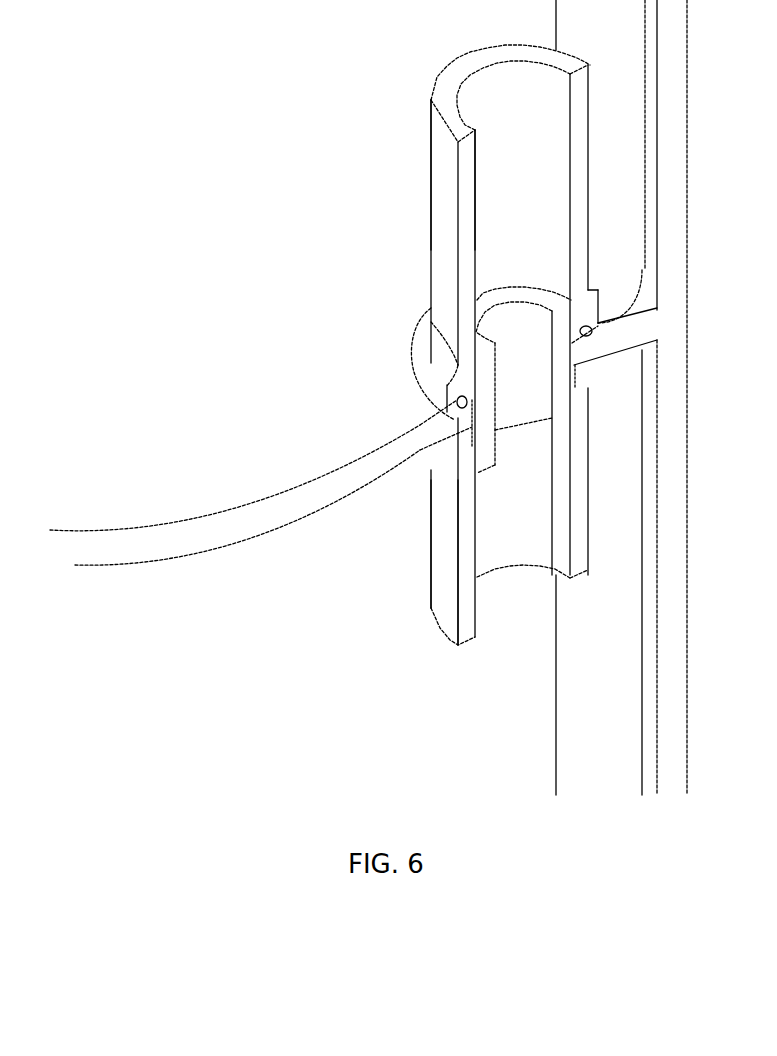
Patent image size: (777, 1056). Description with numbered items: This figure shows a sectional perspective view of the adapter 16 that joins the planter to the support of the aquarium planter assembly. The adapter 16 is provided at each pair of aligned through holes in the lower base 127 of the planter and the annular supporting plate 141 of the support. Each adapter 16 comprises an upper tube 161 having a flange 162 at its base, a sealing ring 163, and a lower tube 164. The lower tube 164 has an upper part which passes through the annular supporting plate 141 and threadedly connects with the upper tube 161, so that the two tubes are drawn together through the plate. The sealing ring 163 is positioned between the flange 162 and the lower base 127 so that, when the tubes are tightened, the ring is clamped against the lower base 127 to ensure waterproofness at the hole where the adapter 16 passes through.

The adapter 16 is at (418, 212).
The upper tube 161 is at (441, 147).
The flange 162 is at (433, 357).
The sealing ring 163 is at (455, 402).
The lower tube 164 is at (445, 555).
The lower base 127 is at (373, 470).
The annular supporting plate 141 is at (420, 462).